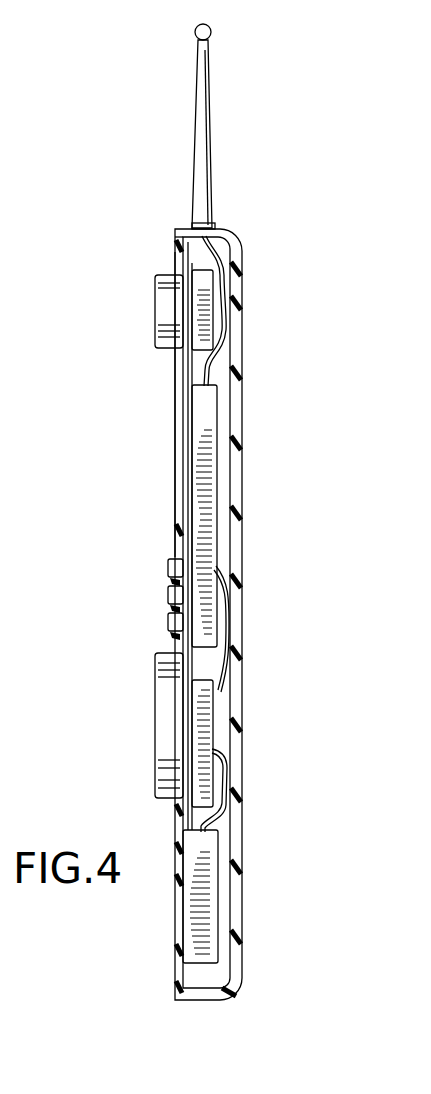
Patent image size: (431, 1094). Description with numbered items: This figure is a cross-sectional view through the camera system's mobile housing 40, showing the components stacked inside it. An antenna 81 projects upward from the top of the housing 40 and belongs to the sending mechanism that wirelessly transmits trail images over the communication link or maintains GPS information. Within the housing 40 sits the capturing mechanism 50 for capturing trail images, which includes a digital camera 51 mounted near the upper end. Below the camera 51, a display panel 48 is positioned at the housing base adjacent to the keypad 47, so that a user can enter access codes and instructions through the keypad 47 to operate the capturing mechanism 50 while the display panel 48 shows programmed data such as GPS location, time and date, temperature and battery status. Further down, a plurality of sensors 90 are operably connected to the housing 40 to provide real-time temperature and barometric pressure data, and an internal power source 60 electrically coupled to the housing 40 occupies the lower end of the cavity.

The mobile housing 40 is at (123, 70).
The antenna 81 is at (194, 140).
The digital camera 51 is at (155, 314).
The capturing mechanism 50 is at (201, 307).
The display panel 48 is at (184, 445).
The keypad 47 is at (168, 587).
The sensors 90 is at (155, 733).
The internal power source 60 is at (205, 912).